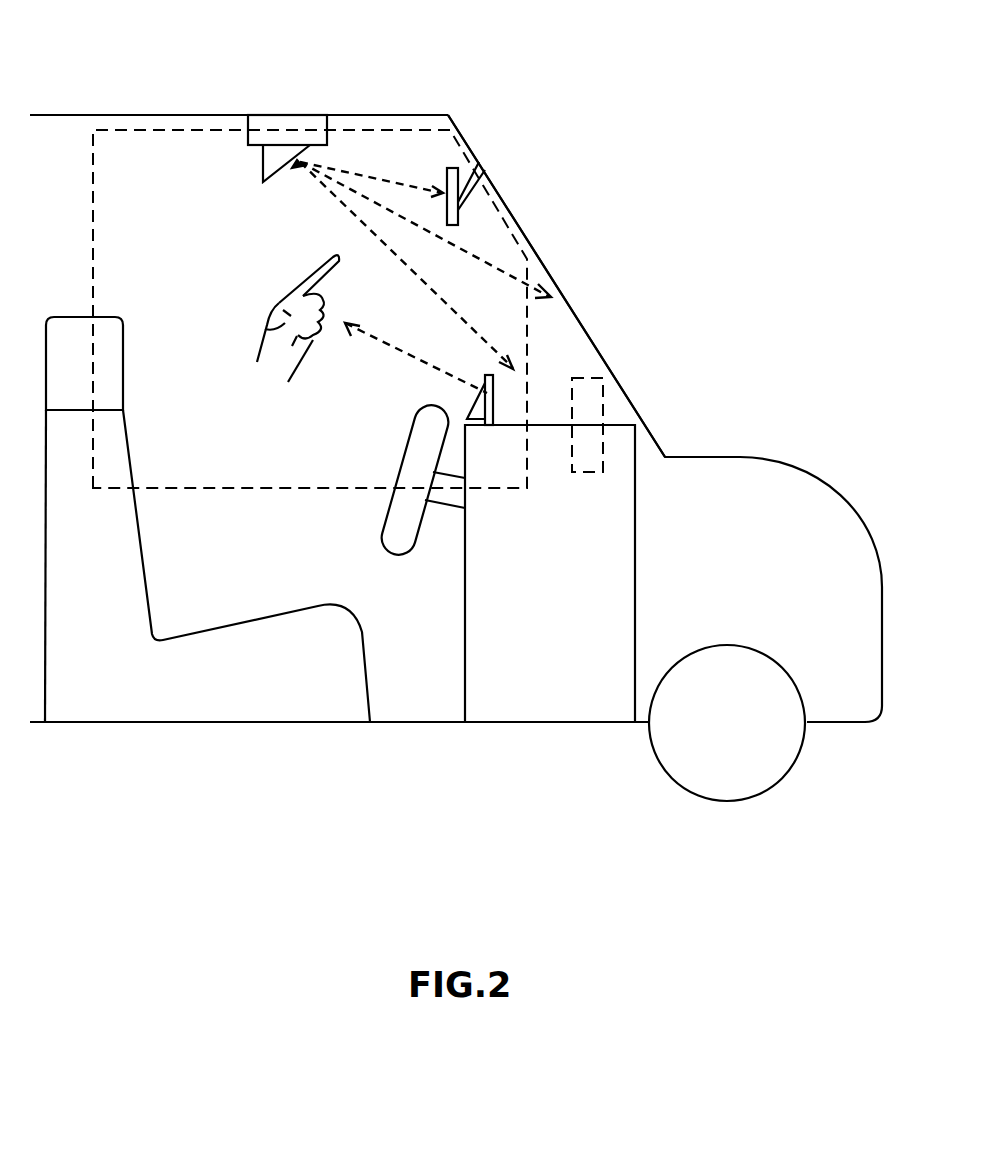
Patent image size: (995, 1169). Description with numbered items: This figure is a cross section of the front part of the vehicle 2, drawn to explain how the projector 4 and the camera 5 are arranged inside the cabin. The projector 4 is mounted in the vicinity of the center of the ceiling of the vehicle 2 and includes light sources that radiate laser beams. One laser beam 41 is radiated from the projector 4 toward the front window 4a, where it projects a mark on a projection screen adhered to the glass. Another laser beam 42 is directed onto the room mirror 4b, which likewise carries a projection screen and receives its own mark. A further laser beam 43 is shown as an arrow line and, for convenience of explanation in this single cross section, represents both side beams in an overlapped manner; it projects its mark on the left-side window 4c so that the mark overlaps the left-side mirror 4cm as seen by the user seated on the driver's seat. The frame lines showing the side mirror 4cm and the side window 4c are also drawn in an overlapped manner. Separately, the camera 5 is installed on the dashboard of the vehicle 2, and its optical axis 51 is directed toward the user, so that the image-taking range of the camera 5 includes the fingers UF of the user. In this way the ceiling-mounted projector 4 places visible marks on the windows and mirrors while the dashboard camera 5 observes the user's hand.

The vehicle 2 is at (83, 114).
The projector 4 is at (280, 152).
The front window 4a is at (571, 308).
The room mirror 4b is at (456, 205).
The left-side window 4c is at (527, 488).
The left-side mirror 4cm is at (593, 400).
The laser beam 41 is at (503, 270).
The laser beam 42 is at (385, 182).
The laser beam 43 is at (348, 213).
The camera 5 is at (485, 390).
The optical axis 51 is at (388, 348).
The fingers UF is at (280, 305).